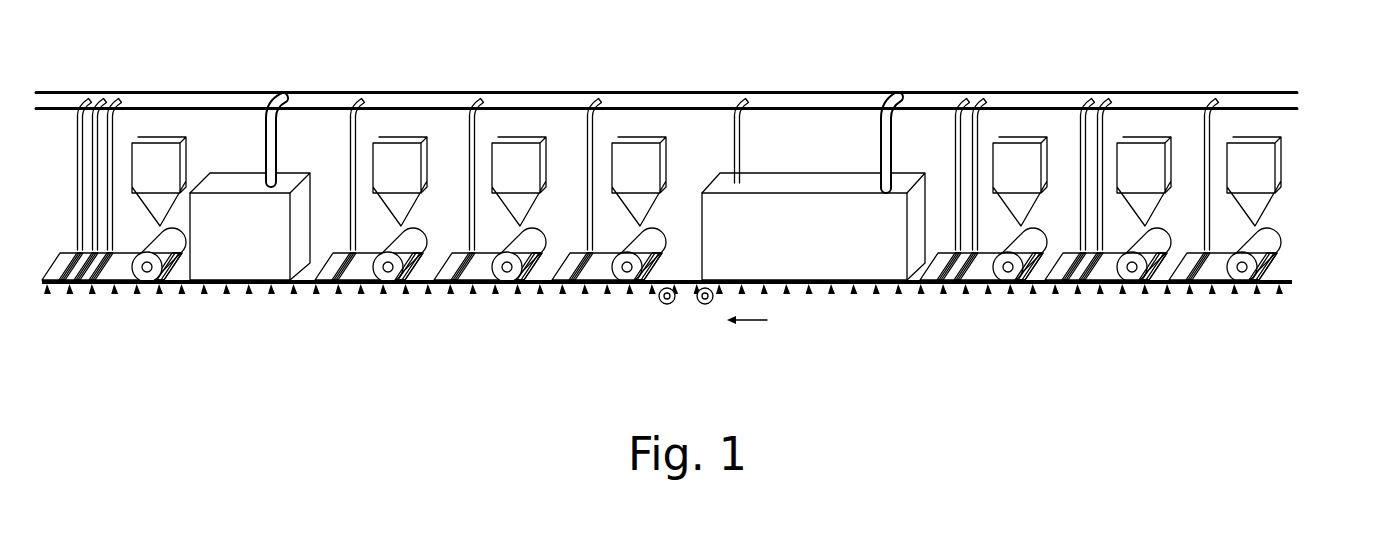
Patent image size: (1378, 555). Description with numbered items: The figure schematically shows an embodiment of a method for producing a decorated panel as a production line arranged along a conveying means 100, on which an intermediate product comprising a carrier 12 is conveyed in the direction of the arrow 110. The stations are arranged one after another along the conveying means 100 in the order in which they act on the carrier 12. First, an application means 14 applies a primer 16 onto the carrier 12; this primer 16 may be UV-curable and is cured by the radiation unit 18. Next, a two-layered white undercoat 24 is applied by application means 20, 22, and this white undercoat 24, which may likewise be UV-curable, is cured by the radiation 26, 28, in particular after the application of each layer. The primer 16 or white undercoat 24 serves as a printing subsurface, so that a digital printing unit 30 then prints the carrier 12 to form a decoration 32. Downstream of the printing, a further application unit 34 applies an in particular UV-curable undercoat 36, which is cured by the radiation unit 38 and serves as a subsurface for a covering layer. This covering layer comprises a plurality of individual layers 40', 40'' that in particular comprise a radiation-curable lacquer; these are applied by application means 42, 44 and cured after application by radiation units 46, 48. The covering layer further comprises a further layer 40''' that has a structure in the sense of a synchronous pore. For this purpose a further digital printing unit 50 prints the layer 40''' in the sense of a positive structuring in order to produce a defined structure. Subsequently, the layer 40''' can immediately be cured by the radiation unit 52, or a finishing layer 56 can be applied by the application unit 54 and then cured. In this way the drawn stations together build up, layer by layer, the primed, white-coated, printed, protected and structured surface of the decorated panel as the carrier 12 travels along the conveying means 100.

The carrier 12 is at (1277, 273).
The application means 14 is at (1252, 163).
The primer 16 is at (1220, 293).
The radiation unit 18 is at (1193, 293).
The application means 20 is at (1140, 163).
The application means 22 is at (1020, 163).
The white undercoat 24 is at (1023, 293).
The radiation 26 is at (1067, 293).
The radiation 28 is at (943, 293).
The digital printing unit 30 is at (798, 183).
The decoration 32 is at (680, 282).
The further application unit 34 is at (637, 160).
The undercoat 36 is at (615, 288).
The radiation unit 38 is at (572, 288).
The individual layer 40' is at (498, 312).
The individual layer 40'' is at (379, 316).
The further layer 40''' is at (173, 323).
The application means 42 is at (515, 160).
The application means 44 is at (395, 160).
The radiation unit 46 is at (445, 295).
The radiation unit 48 is at (318, 298).
The further digital printing unit 50 is at (232, 182).
The radiation unit 52 is at (55, 293).
The application unit 54 is at (158, 153).
The finishing layer 56 is at (137, 293).
The conveying means 100 is at (1283, 293).
The arrow 110 is at (753, 322).